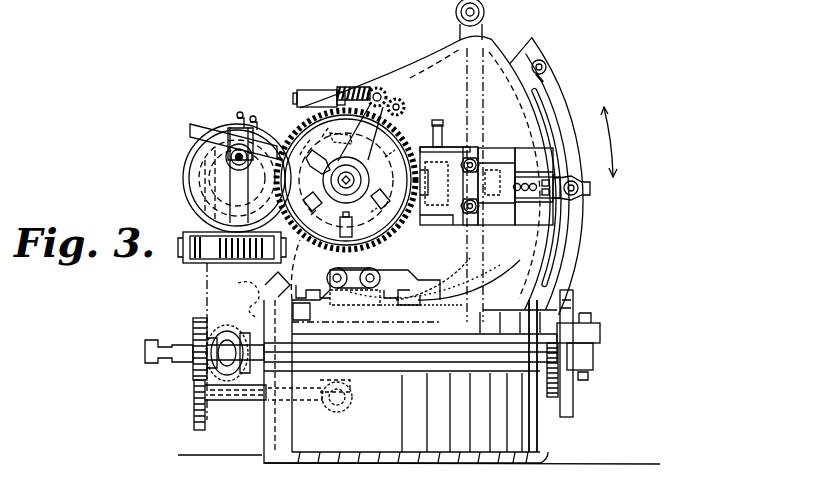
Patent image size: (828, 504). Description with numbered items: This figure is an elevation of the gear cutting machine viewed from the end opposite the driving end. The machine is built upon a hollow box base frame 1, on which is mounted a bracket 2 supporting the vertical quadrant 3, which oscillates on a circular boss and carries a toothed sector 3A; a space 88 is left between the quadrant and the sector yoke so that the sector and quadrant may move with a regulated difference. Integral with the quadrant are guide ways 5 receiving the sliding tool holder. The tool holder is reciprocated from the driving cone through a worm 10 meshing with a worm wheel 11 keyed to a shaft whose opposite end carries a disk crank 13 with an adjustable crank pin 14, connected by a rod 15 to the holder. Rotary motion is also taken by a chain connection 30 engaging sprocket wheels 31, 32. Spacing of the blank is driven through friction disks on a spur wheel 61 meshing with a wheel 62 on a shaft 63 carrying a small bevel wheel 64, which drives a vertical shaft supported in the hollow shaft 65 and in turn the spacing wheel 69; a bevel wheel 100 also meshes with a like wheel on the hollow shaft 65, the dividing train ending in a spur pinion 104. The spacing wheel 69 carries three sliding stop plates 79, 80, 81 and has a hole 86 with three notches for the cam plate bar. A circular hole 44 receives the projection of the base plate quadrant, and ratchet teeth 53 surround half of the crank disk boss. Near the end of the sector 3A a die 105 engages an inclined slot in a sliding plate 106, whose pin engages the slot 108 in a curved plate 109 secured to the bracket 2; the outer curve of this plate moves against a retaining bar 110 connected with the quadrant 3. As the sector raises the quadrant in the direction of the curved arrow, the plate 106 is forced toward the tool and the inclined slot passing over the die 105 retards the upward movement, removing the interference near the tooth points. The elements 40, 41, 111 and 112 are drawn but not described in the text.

The hollow or box base frame 1 is at (389, 418).
The bracket 2 is at (425, 161).
The vertical quadrant 3 is at (405, 267).
The toothed sector 3A is at (468, 276).
The guide ways 5 is at (528, 148).
The worm 10 is at (210, 230).
The worm wheel 11 is at (205, 184).
The disk crank 13 is at (207, 164).
The adjustable crank pin 14 is at (228, 155).
The rod 15 is at (207, 127).
The chain connection 30 is at (207, 291).
The sprocket wheel 31 is at (212, 186).
The sprocket wheel 32 is at (234, 334).
The main gear 40 is at (405, 93).
The worm 41 is at (354, 88).
The circular hole 44 is at (572, 406).
The ratchet teeth 53 is at (576, 389).
The spur wheel 61 is at (196, 320).
The wheel 62 is at (196, 413).
The shaft 63 is at (293, 405).
The small bevel wheel 64 is at (330, 410).
The hollow shaft 65 is at (355, 346).
The spacing wheel 69 is at (388, 150).
The sliding stop plate 79 is at (318, 213).
The sliding stop plate 80 is at (353, 230).
The sliding stop plate 81 is at (389, 199).
The hole 86 is at (322, 143).
The space 88 is at (248, 301).
The bevel wheel 100 is at (355, 398).
The spur pinion 104 is at (578, 197).
The die 105 is at (488, 192).
The plate 106 is at (540, 200).
The slot 108 is at (573, 226).
The curved plate 109 is at (562, 97).
The retaining bar 110 is at (590, 189).
The gear pair 111 is at (392, 272).
The bracket 112 is at (302, 287).